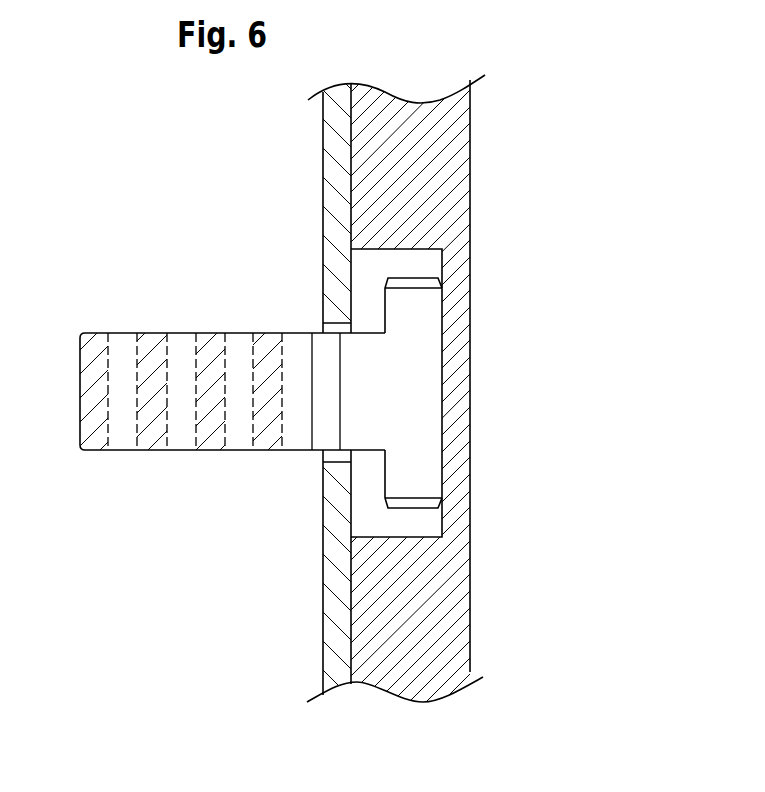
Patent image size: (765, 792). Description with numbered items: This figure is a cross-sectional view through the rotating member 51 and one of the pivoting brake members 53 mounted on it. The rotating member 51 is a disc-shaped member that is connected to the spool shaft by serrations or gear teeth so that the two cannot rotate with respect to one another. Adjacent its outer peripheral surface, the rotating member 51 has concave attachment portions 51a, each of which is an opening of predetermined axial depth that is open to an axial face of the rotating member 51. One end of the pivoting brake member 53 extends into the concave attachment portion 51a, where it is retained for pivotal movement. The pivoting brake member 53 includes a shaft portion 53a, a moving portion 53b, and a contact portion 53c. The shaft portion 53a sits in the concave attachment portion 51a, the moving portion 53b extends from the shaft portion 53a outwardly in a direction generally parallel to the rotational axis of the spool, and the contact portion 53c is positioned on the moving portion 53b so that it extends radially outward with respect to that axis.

The rotating member 51 is at (470, 389).
The concave attachment portion 51a is at (440, 526).
The pivoting brake member 53 is at (334, 378).
The shaft portion 53a is at (423, 308).
The moving portion 53b is at (243, 430).
The contact portion 53c is at (318, 357).